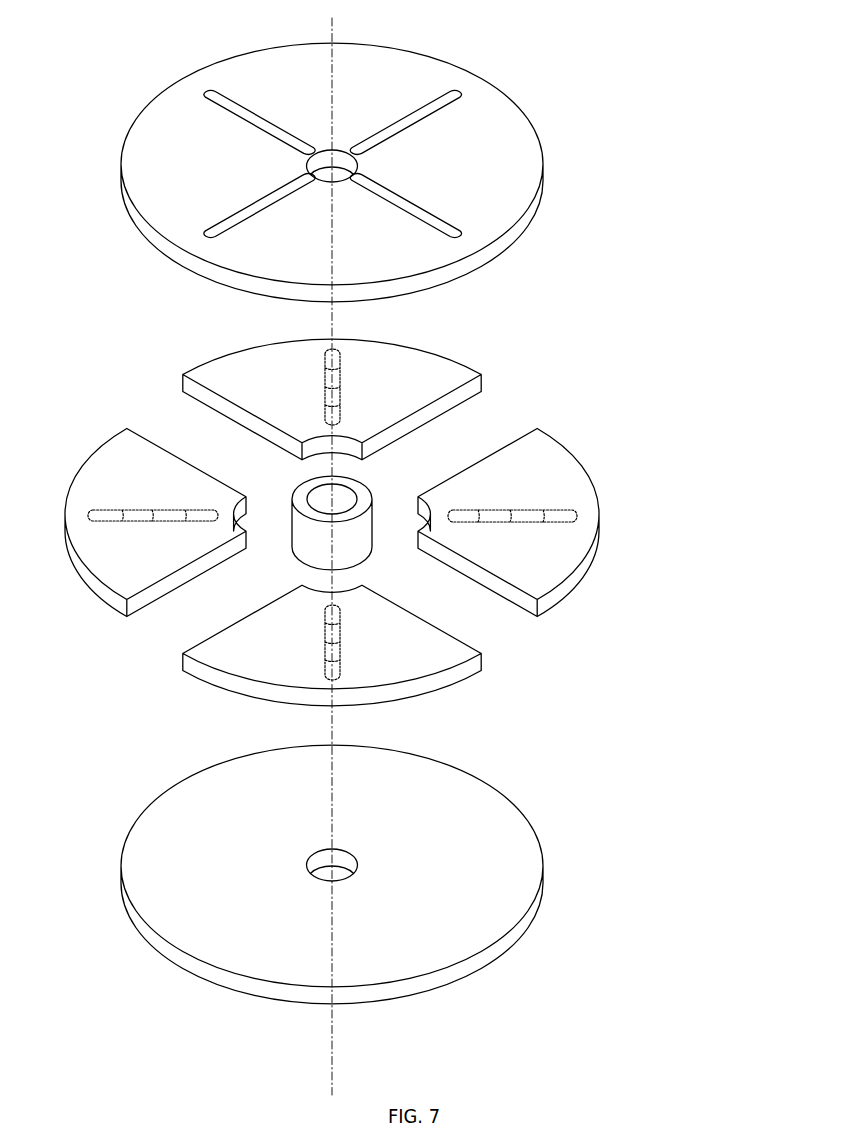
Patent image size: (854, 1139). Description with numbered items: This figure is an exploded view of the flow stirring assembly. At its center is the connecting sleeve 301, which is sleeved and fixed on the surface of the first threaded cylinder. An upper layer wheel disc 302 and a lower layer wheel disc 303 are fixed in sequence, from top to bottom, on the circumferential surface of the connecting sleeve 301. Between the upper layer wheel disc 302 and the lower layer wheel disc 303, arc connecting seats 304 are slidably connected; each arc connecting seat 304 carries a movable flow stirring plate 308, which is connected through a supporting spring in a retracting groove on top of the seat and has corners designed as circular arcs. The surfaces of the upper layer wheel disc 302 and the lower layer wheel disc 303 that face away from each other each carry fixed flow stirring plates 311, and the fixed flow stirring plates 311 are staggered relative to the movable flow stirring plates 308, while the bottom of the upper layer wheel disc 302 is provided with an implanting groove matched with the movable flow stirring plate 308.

The connecting sleeve 301 is at (336, 503).
The upper layer wheel disc 302 is at (483, 118).
The lower layer wheel disc 303 is at (480, 877).
The arc connecting seat 304 is at (538, 455).
The movable flow stirring plate 308 is at (555, 515).
The fixed flow stirring plate 311 is at (435, 222).